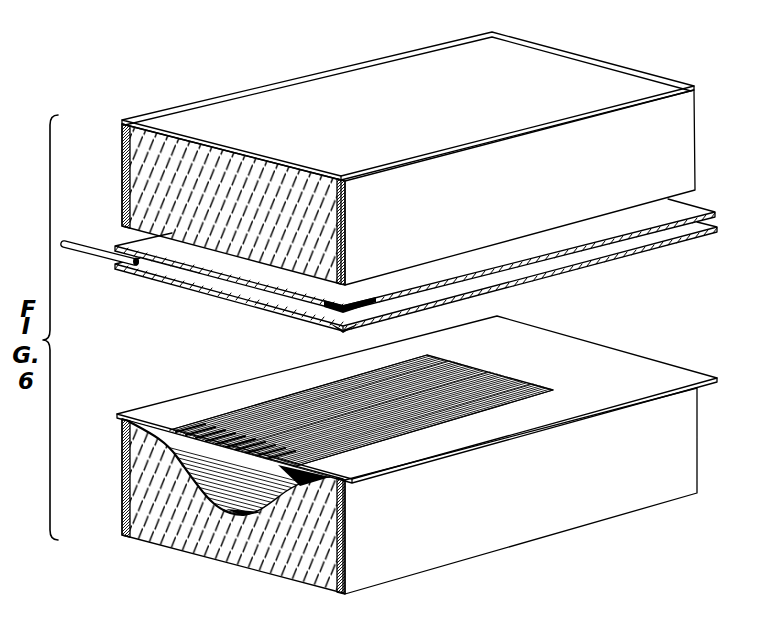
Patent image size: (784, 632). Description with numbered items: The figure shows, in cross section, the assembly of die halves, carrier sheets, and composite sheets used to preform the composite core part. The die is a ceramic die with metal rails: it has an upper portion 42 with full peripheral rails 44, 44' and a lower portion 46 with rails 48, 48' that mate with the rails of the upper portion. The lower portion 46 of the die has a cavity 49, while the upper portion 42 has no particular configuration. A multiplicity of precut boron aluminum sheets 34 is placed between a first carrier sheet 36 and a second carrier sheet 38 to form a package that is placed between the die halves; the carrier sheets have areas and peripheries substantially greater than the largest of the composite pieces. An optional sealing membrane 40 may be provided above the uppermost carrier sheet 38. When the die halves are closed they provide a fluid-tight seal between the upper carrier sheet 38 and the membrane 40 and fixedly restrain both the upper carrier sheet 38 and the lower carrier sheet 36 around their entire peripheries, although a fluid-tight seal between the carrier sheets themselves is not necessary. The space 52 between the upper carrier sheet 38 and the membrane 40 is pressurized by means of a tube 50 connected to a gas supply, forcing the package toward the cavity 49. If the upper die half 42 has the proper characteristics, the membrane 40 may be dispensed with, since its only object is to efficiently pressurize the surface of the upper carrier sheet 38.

The precut boron aluminum sheets 34 is at (313, 401).
The first carrier sheet 36 is at (187, 408).
The second carrier sheet 38 is at (258, 300).
The sealing membrane 40 is at (243, 271).
The upper portion of the die 42 is at (177, 133).
The peripheral rail 44 is at (370, 232).
The peripheral rail 44' is at (102, 176).
The lower portion of the die 46 is at (222, 560).
The rail 48 is at (366, 547).
The rail 48' is at (102, 478).
The cavity 49 is at (228, 494).
The tube 50 is at (96, 246).
The space 52 is at (176, 278).